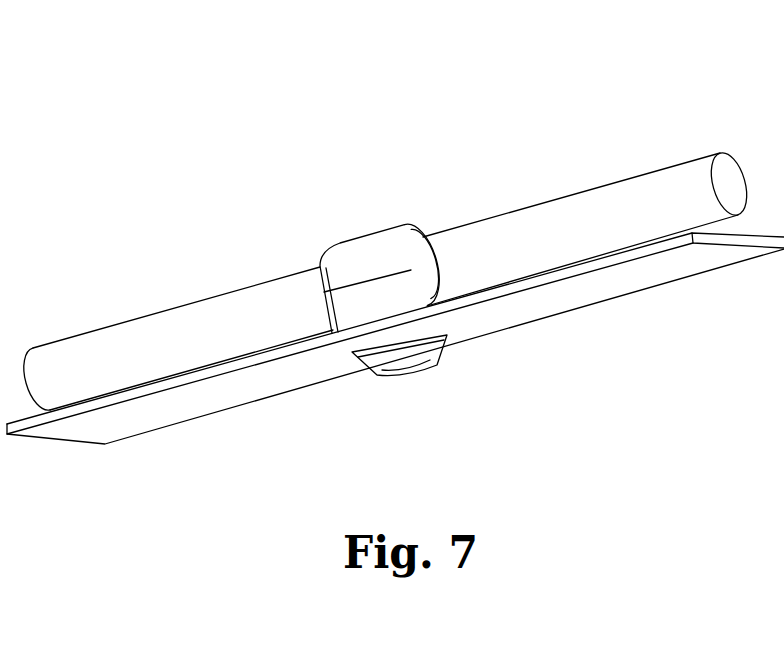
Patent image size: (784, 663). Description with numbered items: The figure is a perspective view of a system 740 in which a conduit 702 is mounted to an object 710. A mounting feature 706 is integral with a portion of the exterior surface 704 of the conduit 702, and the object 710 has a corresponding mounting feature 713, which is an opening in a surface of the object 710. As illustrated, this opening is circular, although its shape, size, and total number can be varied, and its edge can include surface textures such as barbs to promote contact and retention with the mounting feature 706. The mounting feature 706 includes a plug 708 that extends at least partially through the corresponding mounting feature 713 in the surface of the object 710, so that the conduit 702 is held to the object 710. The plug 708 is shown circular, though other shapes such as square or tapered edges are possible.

The track assembly 740 is at (280, 90).
The conduit 702 is at (66, 321).
The exterior surface 704 is at (155, 312).
The mounting feature 706 is at (360, 219).
The plug 708 is at (430, 350).
The object 710 is at (634, 304).
The corresponding mounting feature 713 is at (356, 350).